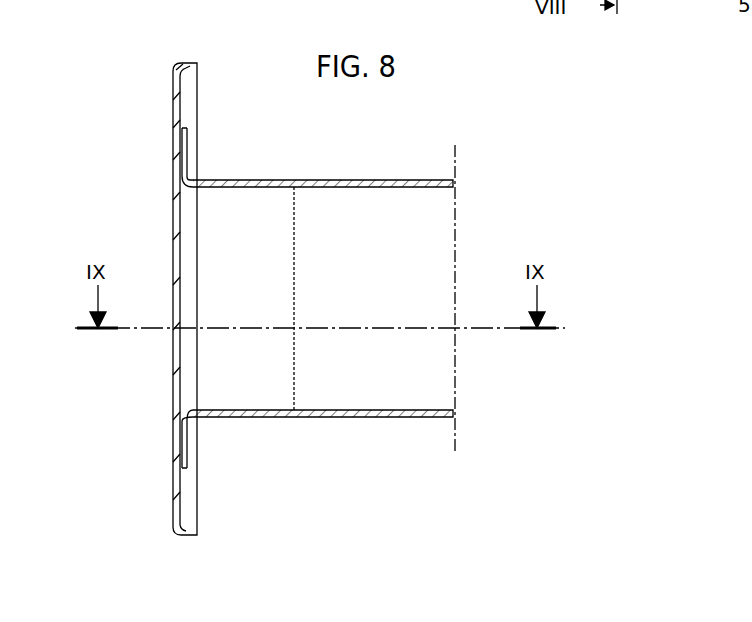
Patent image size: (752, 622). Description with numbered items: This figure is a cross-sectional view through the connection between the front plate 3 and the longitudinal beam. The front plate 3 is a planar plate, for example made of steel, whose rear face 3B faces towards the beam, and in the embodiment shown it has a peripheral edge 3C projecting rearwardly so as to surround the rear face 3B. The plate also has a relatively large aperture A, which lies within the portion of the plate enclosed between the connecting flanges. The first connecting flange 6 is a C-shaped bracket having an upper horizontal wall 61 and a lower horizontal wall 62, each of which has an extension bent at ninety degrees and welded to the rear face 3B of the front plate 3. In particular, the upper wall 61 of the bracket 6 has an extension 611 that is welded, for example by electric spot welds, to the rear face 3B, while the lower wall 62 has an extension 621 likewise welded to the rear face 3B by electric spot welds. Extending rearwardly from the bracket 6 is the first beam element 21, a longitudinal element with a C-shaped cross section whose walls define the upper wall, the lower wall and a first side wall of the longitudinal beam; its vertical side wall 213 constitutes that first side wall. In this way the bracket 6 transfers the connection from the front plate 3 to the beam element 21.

The front plate 3 is at (176, 66).
The rear face 3B is at (181, 516).
The peripheral edge 3C is at (190, 536).
The first connecting flange 6 is at (317, 293).
The upper horizontal wall 61 is at (222, 185).
The extension 611 is at (186, 148).
The lower horizontal wall 62 is at (239, 418).
The extension 621 is at (190, 458).
The first beam element 21 is at (407, 180).
The vertical side wall 213 is at (431, 362).
The aperture A is at (178, 363).